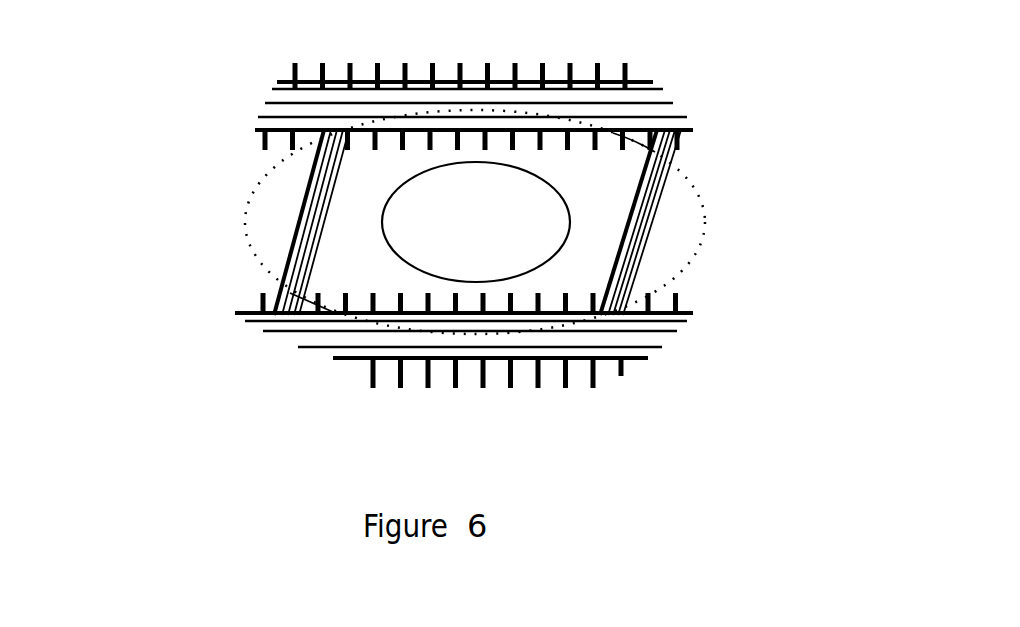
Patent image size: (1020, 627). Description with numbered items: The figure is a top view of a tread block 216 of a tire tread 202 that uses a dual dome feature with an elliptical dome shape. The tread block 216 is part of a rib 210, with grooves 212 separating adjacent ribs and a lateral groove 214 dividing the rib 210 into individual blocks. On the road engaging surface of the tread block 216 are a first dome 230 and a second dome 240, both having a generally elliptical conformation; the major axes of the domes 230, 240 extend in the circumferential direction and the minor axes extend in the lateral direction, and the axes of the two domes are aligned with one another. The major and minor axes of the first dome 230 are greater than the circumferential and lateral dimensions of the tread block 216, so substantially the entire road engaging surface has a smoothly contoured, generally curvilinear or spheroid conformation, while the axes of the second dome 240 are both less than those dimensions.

The tire tread 202 is at (180, 331).
The rib 210 is at (551, 224).
The tread block 216 is at (622, 45).
The groove 212 is at (675, 112).
The lateral groove 214 is at (340, 176).
The second dome 240 is at (374, 205).
The first dome 230 is at (244, 246).